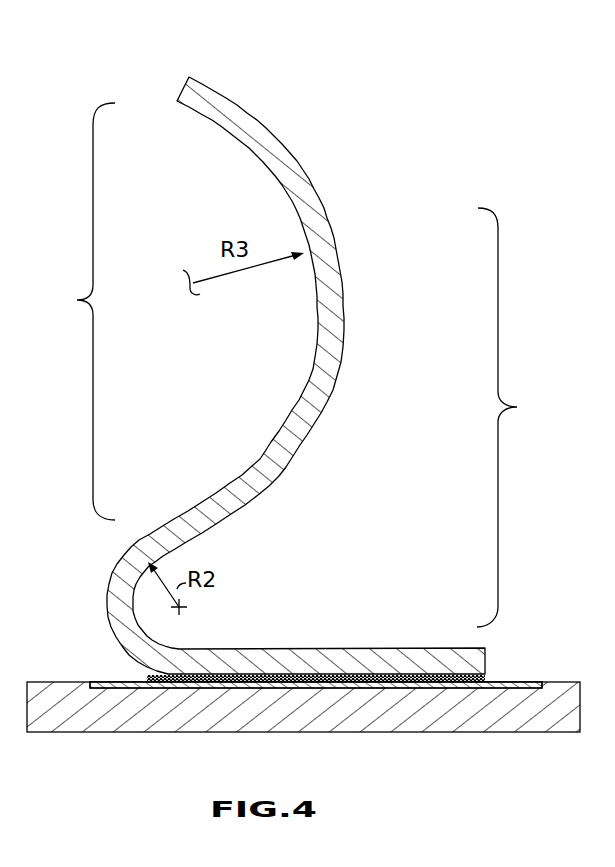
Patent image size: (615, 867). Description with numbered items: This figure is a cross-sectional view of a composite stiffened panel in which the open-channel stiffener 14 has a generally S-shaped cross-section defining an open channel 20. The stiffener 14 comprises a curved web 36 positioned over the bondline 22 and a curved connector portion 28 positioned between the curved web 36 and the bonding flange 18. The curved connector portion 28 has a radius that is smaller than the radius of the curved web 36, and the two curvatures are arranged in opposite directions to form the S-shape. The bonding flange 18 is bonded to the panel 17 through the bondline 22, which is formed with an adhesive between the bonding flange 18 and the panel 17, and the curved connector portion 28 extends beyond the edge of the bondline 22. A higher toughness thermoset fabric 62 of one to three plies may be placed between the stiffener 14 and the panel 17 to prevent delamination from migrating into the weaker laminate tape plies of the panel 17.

The open-channel stiffener 14 is at (371, 213).
The panel 17 is at (508, 712).
The bonding flange 18 is at (313, 648).
The open channel 20 is at (297, 365).
The bondline 22 is at (486, 679).
The curved connector portion 28 is at (111, 593).
The curved web 36 is at (342, 337).
The higher toughness thermoset fabric 62 is at (128, 684).